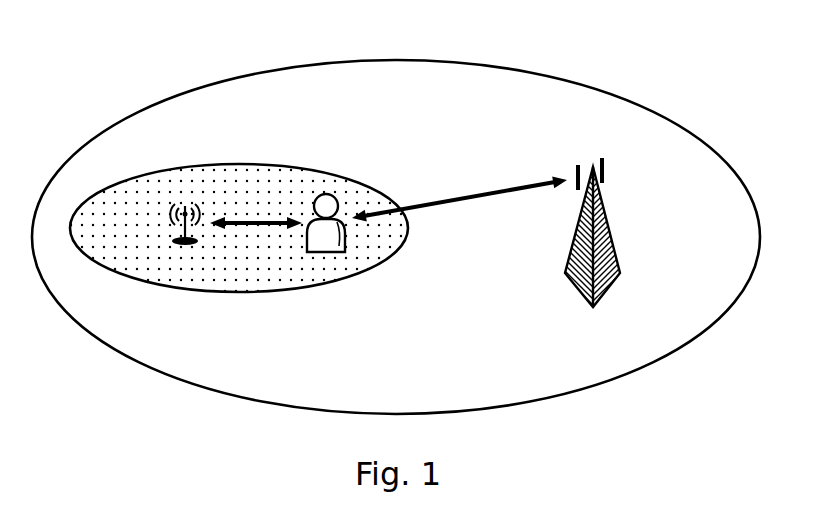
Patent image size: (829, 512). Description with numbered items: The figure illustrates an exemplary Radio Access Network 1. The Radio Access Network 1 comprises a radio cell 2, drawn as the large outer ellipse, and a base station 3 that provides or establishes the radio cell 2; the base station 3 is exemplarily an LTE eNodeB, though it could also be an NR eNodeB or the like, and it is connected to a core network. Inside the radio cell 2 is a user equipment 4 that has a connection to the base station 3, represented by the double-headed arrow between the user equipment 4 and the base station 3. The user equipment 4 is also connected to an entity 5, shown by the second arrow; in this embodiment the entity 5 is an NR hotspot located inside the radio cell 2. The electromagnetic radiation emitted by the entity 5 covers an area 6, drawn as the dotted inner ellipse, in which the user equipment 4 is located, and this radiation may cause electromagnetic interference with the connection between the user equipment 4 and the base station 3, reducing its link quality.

The Radio Access Network 1 is at (626, 78).
The radio cell 2 is at (177, 93).
The base station 3 is at (606, 220).
The user equipment 4 is at (337, 193).
The entity 5 is at (188, 245).
The area 6 is at (373, 270).